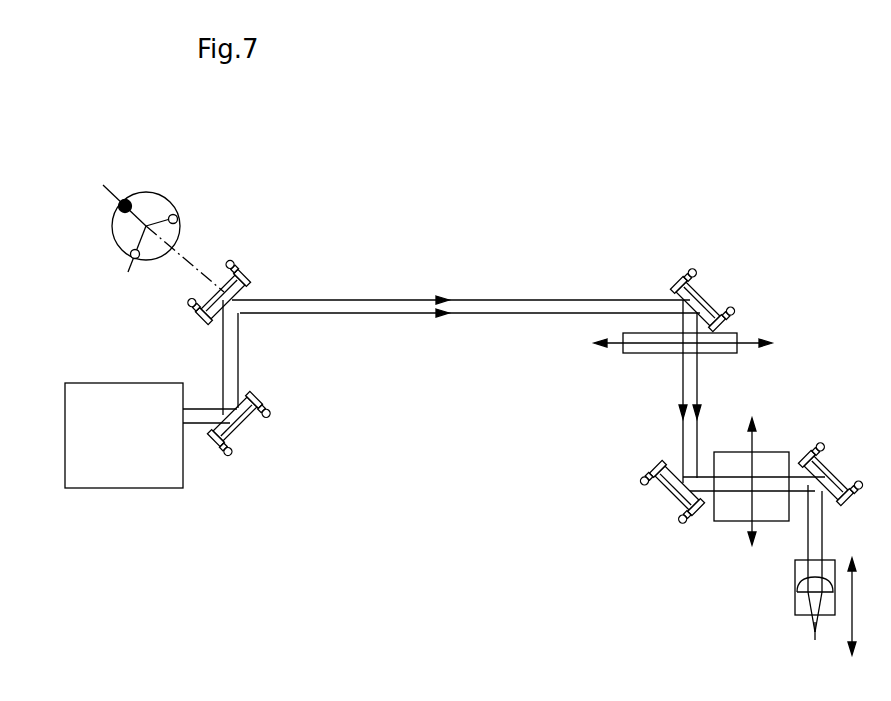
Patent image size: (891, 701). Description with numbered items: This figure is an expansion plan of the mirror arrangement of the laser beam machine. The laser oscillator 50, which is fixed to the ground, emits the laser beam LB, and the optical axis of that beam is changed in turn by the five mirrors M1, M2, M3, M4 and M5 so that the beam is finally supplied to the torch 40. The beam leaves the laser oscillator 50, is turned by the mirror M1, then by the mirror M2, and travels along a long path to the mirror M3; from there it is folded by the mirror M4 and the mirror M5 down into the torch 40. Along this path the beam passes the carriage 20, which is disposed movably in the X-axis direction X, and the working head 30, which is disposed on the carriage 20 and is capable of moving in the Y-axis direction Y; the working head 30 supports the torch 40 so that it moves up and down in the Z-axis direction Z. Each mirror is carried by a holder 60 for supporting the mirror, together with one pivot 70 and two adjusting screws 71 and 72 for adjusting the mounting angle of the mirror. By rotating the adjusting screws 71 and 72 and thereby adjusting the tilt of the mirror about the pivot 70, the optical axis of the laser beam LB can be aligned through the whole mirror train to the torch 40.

The holder 60 is at (158, 205).
The pivot 70 is at (125, 199).
The adjusting screw 71 is at (131, 256).
The adjusting screw 72 is at (178, 217).
The laser oscillator 50 is at (123, 480).
The mirror M1 is at (245, 424).
The mirror M2 is at (254, 302).
The laser beam LB is at (396, 312).
The mirror M3 is at (715, 297).
The carriage 20 is at (637, 353).
The X-axis direction X is at (683, 330).
The mirror M4 is at (673, 500).
The working head 30 is at (723, 522).
The Y-axis direction Y is at (751, 467).
The mirror M5 is at (826, 474).
The torch 40 is at (800, 598).
The Z-axis direction Z is at (860, 606).